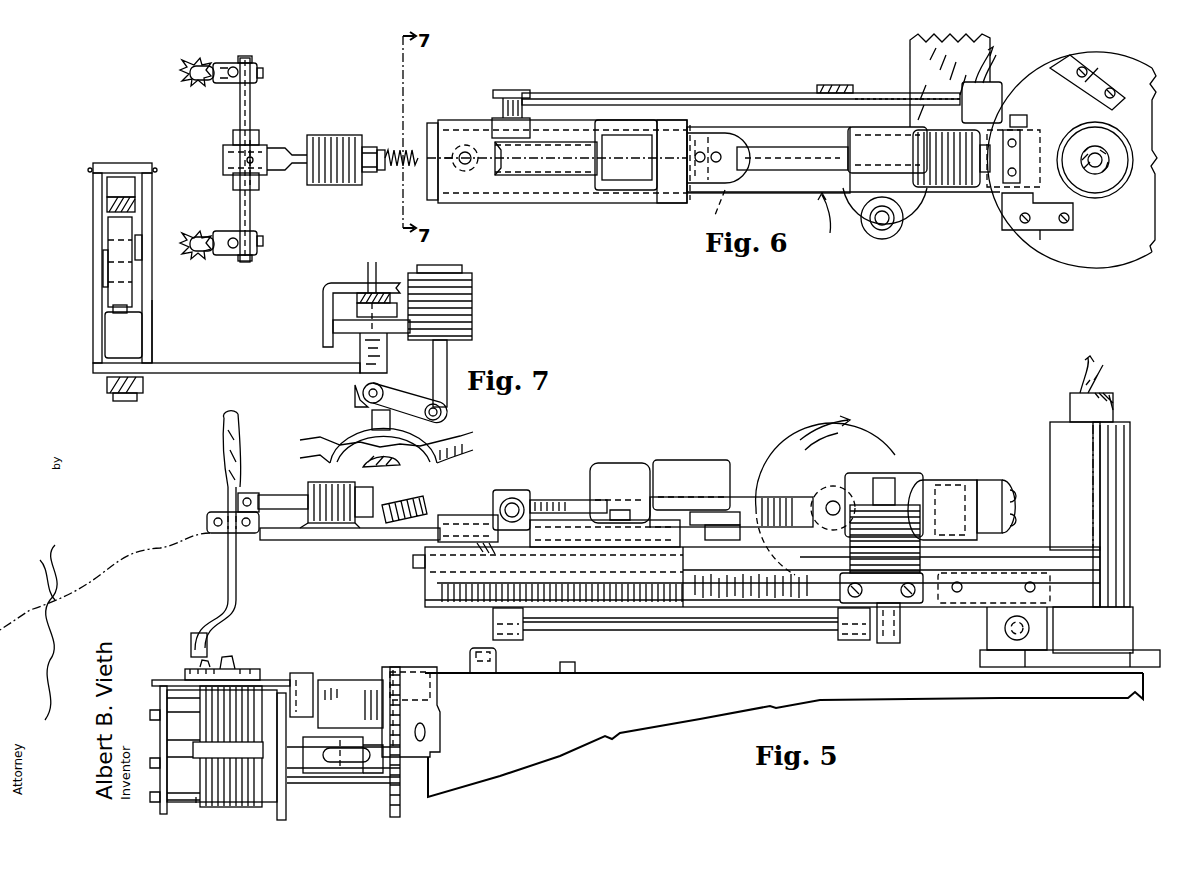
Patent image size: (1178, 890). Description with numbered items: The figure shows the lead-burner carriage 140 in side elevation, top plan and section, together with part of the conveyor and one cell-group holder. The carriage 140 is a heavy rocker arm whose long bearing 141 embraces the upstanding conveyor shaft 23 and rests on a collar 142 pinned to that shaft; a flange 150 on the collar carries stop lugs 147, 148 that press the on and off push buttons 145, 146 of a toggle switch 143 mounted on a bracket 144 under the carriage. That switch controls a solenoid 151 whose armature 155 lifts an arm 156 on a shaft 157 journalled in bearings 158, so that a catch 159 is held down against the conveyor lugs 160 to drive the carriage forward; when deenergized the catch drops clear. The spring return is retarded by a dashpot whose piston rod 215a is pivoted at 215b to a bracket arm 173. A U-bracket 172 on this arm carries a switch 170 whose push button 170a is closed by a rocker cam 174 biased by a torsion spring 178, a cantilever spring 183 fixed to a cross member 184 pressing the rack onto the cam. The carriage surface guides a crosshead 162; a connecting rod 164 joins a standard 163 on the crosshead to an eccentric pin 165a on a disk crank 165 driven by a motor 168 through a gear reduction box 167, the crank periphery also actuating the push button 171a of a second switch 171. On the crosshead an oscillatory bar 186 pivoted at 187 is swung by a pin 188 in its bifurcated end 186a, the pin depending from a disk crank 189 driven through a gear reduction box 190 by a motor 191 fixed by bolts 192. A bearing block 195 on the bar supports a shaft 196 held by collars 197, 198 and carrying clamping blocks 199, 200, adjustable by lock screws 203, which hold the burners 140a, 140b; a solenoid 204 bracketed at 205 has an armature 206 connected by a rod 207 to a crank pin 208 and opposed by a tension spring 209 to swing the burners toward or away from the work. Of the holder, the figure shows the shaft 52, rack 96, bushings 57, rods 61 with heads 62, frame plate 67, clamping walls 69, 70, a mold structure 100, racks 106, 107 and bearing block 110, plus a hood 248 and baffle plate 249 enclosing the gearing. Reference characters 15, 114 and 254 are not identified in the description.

In FIG. 7, the trimming mechanism 15 is at (469, 429).
In FIG. 5, the trimming mechanism 15 is at (457, 653).
In FIG. 6, the axial upstanding shaft 23 is at (1106, 147).
In FIG. 5, the axial upstanding shaft 23 is at (1072, 400).
In FIG. 7, the horizontal shaft 52 is at (400, 462).
In FIG. 5, the horizontal shaft 52 is at (370, 775).
In FIG. 5, the bushings 57 is at (228, 746).
In FIG. 5, the rods 61 is at (185, 750).
In FIG. 5, the heads 62 is at (330, 774).
In FIG. 5, the vertical frame plate 67 is at (160, 693).
In FIG. 5, the side wall 69 is at (200, 803).
In FIG. 5, the clamping wall 70 is at (262, 803).
In FIG. 5, the rack 96 is at (575, 665).
In FIG. 5, the mold structure 100 is at (170, 682).
In FIG. 5, the horizontal rack 106 is at (322, 720).
In FIG. 5, the horizontal rack 107 is at (300, 675).
In FIG. 5, the bearing block 110 is at (350, 682).
In FIG. 5, the terminal strip 114 is at (182, 673).
In FIG. 6, the carriage 140 is at (813, 218).
In FIG. 7, the carriage 140 is at (327, 330).
In FIG. 5, the carriage 140 is at (408, 568).
In FIG. 6, the acetylene burner 140a is at (183, 62).
In FIG. 6, the acetylene burner 140b is at (200, 259).
In FIG. 5, the acetylene burner 140b is at (218, 648).
In FIG. 5, the long bearing 141 is at (1052, 440).
In FIG. 6, the collar 142 is at (1100, 188).
In FIG. 5, the collar 142 is at (1093, 537).
In FIG. 5, the on-off toggle switch 143 is at (1030, 660).
In FIG. 5, the bracket 144 is at (990, 630).
In FIG. 6, the on push button 145 is at (1025, 230).
In FIG. 6, the off push button 146 is at (1027, 118).
In FIG. 6, the stop lug 147 is at (1045, 240).
In FIG. 5, the stop lug 147 is at (1063, 660).
In FIG. 6, the stop lug 148 is at (1088, 72).
In FIG. 6, the flange 150 is at (1120, 258).
In FIG. 5, the flange 150 is at (1116, 660).
In FIG. 6, the solenoid 151 is at (890, 246).
In FIG. 7, the solenoid 151 is at (474, 293).
In FIG. 5, the solenoid 151 is at (866, 497).
In FIG. 6, the armature 155 is at (880, 227).
In FIG. 7, the armature 155 is at (442, 362).
In FIG. 5, the armature 155 is at (900, 480).
In FIG. 7, the arm 156 is at (410, 403).
In FIG. 5, the arm 156 is at (897, 625).
In FIG. 5, the shaft 157 is at (665, 630).
In FIG. 5, the bearings 158 is at (681, 624).
In FIG. 7, the catch 159 is at (362, 393).
In FIG. 7, the lugs 160 is at (375, 418).
In FIG. 5, the lugs 160 is at (497, 657).
In FIG. 6, the crosshead 162 is at (586, 208).
In FIG. 7, the crosshead 162 is at (318, 339).
In FIG. 5, the crosshead 162 is at (556, 520).
In FIG. 6, the standard 163 is at (497, 120).
In FIG. 5, the standard 163 is at (519, 490).
In FIG. 6, the connecting rod 164 is at (677, 93).
In FIG. 5, the connecting rod 164 is at (548, 500).
In FIG. 6, the disk crank 165 is at (890, 100).
In FIG. 5, the disk crank 165 is at (880, 435).
In FIG. 6, the eccentric pin 165a is at (833, 85).
In FIG. 5, the eccentric pin 165a is at (948, 482).
In FIG. 6, the gear reduction box 167 is at (887, 150).
In FIG. 6, the motor 168 is at (951, 158).
In FIG. 6, the switch 170 is at (123, 335).
In FIG. 6, the switch push button 170a is at (113, 308).
In FIG. 6, the switch 171 is at (956, 80).
In FIG. 5, the switch 171 is at (996, 482).
In FIG. 6, the push button 171a is at (993, 52).
In FIG. 6, the U-bracket 172 is at (160, 307).
In FIG. 6, the bracket arm 173 is at (200, 363).
In FIG. 5, the bracket arm 173 is at (994, 588).
In FIG. 6, the rocker cam 174 is at (108, 240).
In FIG. 6, the torsion spring 178 is at (103, 220).
In FIG. 6, the cantilever spring 183 is at (107, 203).
In FIG. 6, the cross member 184 is at (120, 170).
In FIG. 5, the cross member 184 is at (1011, 496).
In FIG. 6, the oscillatory bar 186 is at (555, 177).
In FIG. 7, the oscillatory bar 186 is at (340, 293).
In FIG. 5, the oscillatory bar 186 is at (893, 592).
In FIG. 6, the bifurcated end 186a is at (710, 134).
In FIG. 6, the pivot 187 is at (467, 165).
In FIG. 7, the pivot 187 is at (377, 280).
In FIG. 5, the pivot 187 is at (468, 515).
In FIG. 6, the pin 188 is at (710, 190).
In FIG. 5, the pin 188 is at (715, 540).
In FIG. 6, the disk crank 189 is at (738, 170).
In FIG. 5, the disk crank 189 is at (752, 508).
In FIG. 6, the gear reduction box 190 is at (675, 182).
In FIG. 5, the gear reduction box 190 is at (691, 485).
In FIG. 6, the motor 191 is at (626, 155).
In FIG. 5, the motor 191 is at (620, 493).
In FIG. 5, the bolts 192 is at (619, 502).
In FIG. 6, the bearing block 195 is at (260, 152).
In FIG. 6, the lateral shaft 196 is at (240, 112).
In FIG. 5, the lateral shaft 196 is at (250, 533).
In FIG. 6, the collar 197 is at (259, 186).
In FIG. 5, the collar 197 is at (250, 494).
In FIG. 6, the collar 198 is at (233, 137).
In FIG. 6, the clamping block 199 is at (257, 236).
In FIG. 6, the clamping block 200 is at (262, 68).
In FIG. 6, the lock screws 203 is at (263, 74).
In FIG. 6, the solenoid 204 is at (330, 135).
In FIG. 5, the solenoid 204 is at (328, 525).
In FIG. 6, the bracket 205 is at (380, 150).
In FIG. 5, the bracket 205 is at (385, 540).
In FIG. 6, the armature 206 is at (364, 180).
In FIG. 5, the armature 206 is at (373, 496).
In FIG. 6, the rod 207 is at (290, 148).
In FIG. 5, the rod 207 is at (283, 502).
In FIG. 6, the crank pin 208 is at (223, 153).
In FIG. 6, the tension spring 209 is at (410, 152).
In FIG. 5, the tension spring 209 is at (420, 503).
In FIG. 6, the piston rod 215a is at (117, 393).
In FIG. 6, the pivot connection 215b is at (107, 382).
In FIG. 7, the hood 248 is at (348, 455).
In FIG. 5, the hood 248 is at (415, 677).
In FIG. 5, the baffle plate 249 is at (400, 808).
In FIG. 5, the wires 254 is at (1078, 382).